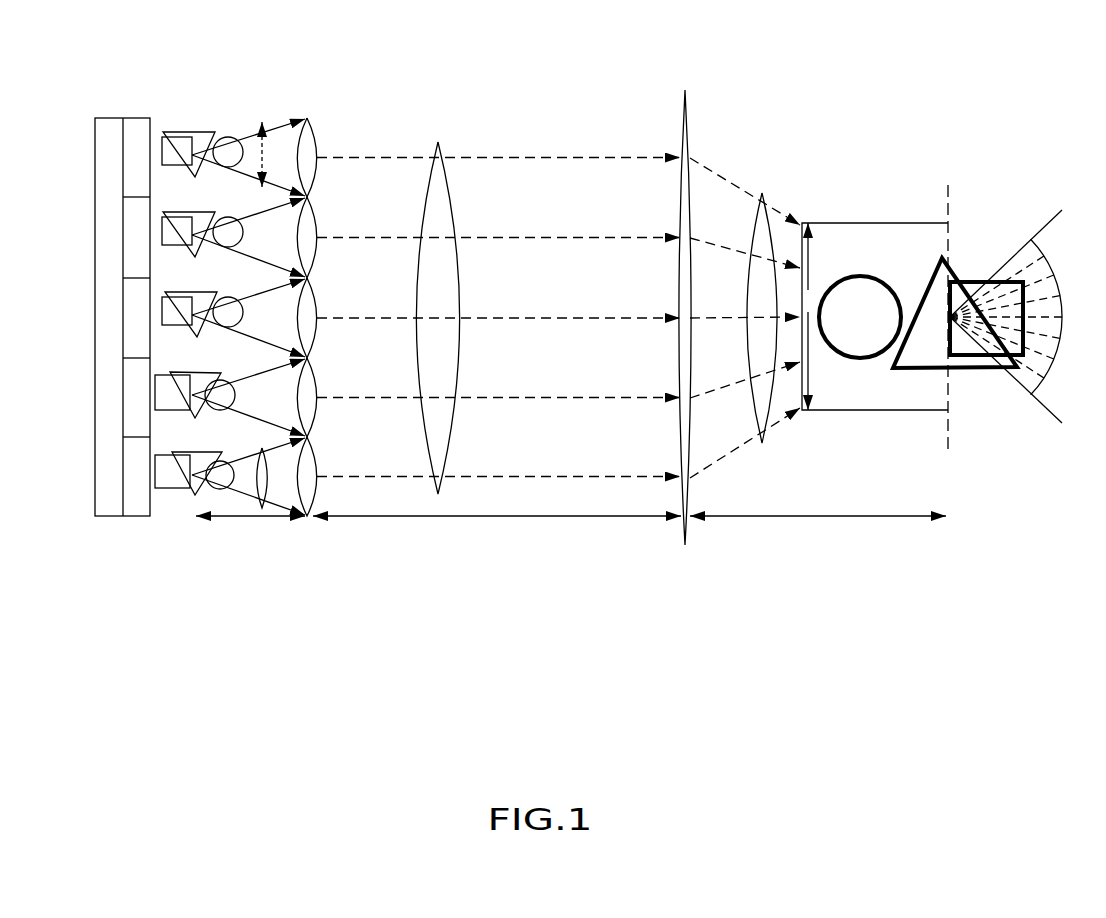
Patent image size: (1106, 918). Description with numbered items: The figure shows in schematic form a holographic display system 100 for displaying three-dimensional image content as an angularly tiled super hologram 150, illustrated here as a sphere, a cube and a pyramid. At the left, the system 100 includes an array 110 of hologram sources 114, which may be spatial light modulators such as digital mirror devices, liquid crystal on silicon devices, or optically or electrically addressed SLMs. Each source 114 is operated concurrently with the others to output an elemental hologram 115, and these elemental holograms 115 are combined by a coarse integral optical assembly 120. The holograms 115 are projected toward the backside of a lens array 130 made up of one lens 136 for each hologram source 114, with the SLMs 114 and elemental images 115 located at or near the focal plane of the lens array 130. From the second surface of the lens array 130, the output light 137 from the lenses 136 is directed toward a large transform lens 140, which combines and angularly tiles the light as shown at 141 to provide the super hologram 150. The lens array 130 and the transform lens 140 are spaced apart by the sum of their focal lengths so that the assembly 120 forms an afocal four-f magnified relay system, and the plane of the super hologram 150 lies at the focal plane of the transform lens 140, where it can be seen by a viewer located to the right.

The holographic display system 100 is at (912, 97).
The array of hologram sources 110 is at (95, 532).
The hologram source 114 is at (122, 362).
The elemental hologram 115 is at (188, 520).
The coarse integral optical assembly 120 is at (290, 655).
The lens array 130 is at (305, 518).
The lens 136 is at (316, 413).
The output light 137 is at (436, 142).
The transform lens 140 is at (685, 530).
The combined light 141 is at (762, 193).
The super hologram 150 is at (975, 388).